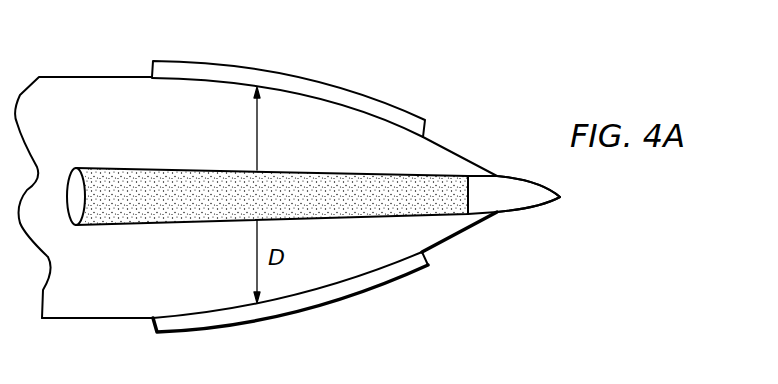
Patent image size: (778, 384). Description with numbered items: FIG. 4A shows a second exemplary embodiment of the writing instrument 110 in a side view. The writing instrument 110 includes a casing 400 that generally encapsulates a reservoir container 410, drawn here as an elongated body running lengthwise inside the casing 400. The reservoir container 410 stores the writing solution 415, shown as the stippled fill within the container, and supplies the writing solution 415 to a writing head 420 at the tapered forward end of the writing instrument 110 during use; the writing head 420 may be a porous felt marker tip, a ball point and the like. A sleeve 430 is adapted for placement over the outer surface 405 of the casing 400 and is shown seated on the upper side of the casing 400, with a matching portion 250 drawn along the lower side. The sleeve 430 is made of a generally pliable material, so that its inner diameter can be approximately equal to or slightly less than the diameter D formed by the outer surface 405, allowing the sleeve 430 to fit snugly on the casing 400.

The writing instrument 110 is at (482, 95).
The lower plate 250 is at (308, 318).
The casing 400 is at (78, 318).
The outer surface 405 is at (61, 78).
The reservoir container 410 is at (147, 225).
The writing solution 415 is at (269, 205).
The writing head 420 is at (527, 200).
The sleeve 430 is at (330, 88).